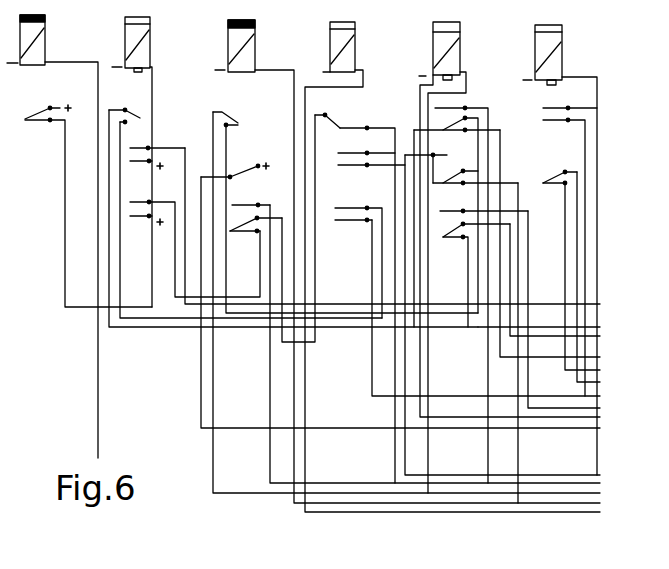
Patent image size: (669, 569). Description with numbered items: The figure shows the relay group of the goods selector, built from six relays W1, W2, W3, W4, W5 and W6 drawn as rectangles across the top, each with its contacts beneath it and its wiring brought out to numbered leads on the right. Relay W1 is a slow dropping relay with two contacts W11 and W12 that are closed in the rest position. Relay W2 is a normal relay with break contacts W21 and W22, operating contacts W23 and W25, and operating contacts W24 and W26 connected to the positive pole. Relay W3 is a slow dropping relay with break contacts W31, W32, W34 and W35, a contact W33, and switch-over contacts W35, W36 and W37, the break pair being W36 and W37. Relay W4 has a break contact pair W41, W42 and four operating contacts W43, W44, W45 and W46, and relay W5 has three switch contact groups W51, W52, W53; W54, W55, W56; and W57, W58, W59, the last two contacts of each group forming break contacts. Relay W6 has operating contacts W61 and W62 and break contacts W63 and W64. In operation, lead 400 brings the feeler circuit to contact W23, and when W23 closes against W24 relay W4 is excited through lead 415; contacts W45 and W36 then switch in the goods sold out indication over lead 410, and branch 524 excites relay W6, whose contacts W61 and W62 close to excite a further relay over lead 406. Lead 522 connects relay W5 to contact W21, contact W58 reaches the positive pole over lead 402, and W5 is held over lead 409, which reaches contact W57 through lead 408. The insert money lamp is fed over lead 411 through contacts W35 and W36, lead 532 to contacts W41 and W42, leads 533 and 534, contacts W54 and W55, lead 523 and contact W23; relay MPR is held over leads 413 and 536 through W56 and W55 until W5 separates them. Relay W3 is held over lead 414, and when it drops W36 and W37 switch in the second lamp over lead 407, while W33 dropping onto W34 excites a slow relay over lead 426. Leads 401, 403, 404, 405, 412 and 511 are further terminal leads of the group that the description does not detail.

The lead 400 is at (600, 304).
The terminal line 401 is at (600, 327).
The lead 402 is at (600, 336).
The terminal line 403 is at (600, 357).
The terminal line 404 is at (600, 370).
The terminal line 405 is at (600, 382).
The lead 406 is at (582, 386).
The lead 407 is at (482, 396).
The lead 408 is at (600, 408).
The lead 409 is at (466, 78).
The lead 410 is at (580, 475).
The lead 411 is at (600, 475).
The terminal line 412 is at (600, 483).
The lead 413 is at (600, 493).
The lead 414 is at (290, 70).
The lead 415 is at (600, 512).
The lead 426 is at (600, 428).
The conductor 511 is at (190, 316).
The lead 522 is at (168, 328).
The lead 523 is at (453, 318).
The branch of lead 410 524 is at (596, 254).
The lead 532 is at (312, 342).
The lead 533 is at (393, 386).
The lead 534 is at (431, 442).
The lead 536 is at (515, 465).
The relay W1 is at (52, 229).
The relay W2 is at (132, 153).
The relay W3 is at (235, 37).
The relay W4 is at (339, 38).
The relay W5 is at (439, 43).
The relay W6 is at (542, 46).
The contact W11 is at (44, 108).
The contact W12 is at (88, 212).
The break contact W21 is at (130, 107).
The break contact W22 is at (251, 219).
The operating contact W23 is at (152, 148).
The operating contact W24 is at (145, 170).
The operating contact W25 is at (194, 239).
The operating contact W26 is at (145, 225).
The break contact W31 is at (228, 114).
The break contact W32 is at (238, 125).
The contact W33 is at (261, 159).
The break contact W34 is at (229, 169).
The switch-over contact W35 is at (245, 205).
The switch-over contact W36 is at (256, 218).
The switch-over contact W37 is at (245, 240).
The break contact W41 is at (340, 106).
The break contact W42 is at (357, 128).
The operating contact W43 is at (360, 153).
The operating contact W44 is at (358, 166).
The operating contact W45 is at (357, 208).
The operating contact W46 is at (354, 221).
The switch contact W51 is at (457, 106).
The switch contact W52 is at (462, 118).
The switch contact W53 is at (455, 132).
The switch contact W54 is at (434, 161).
The switch contact W55 is at (459, 171).
The switch contact W56 is at (475, 191).
The switch contact W57 is at (484, 205).
The switch contact W58 is at (472, 225).
The switch contact W59 is at (454, 281).
The operating contact W61 is at (570, 99).
The operating contact W62 is at (564, 257).
The break contact W63 is at (558, 171).
The break contact W64 is at (553, 194).